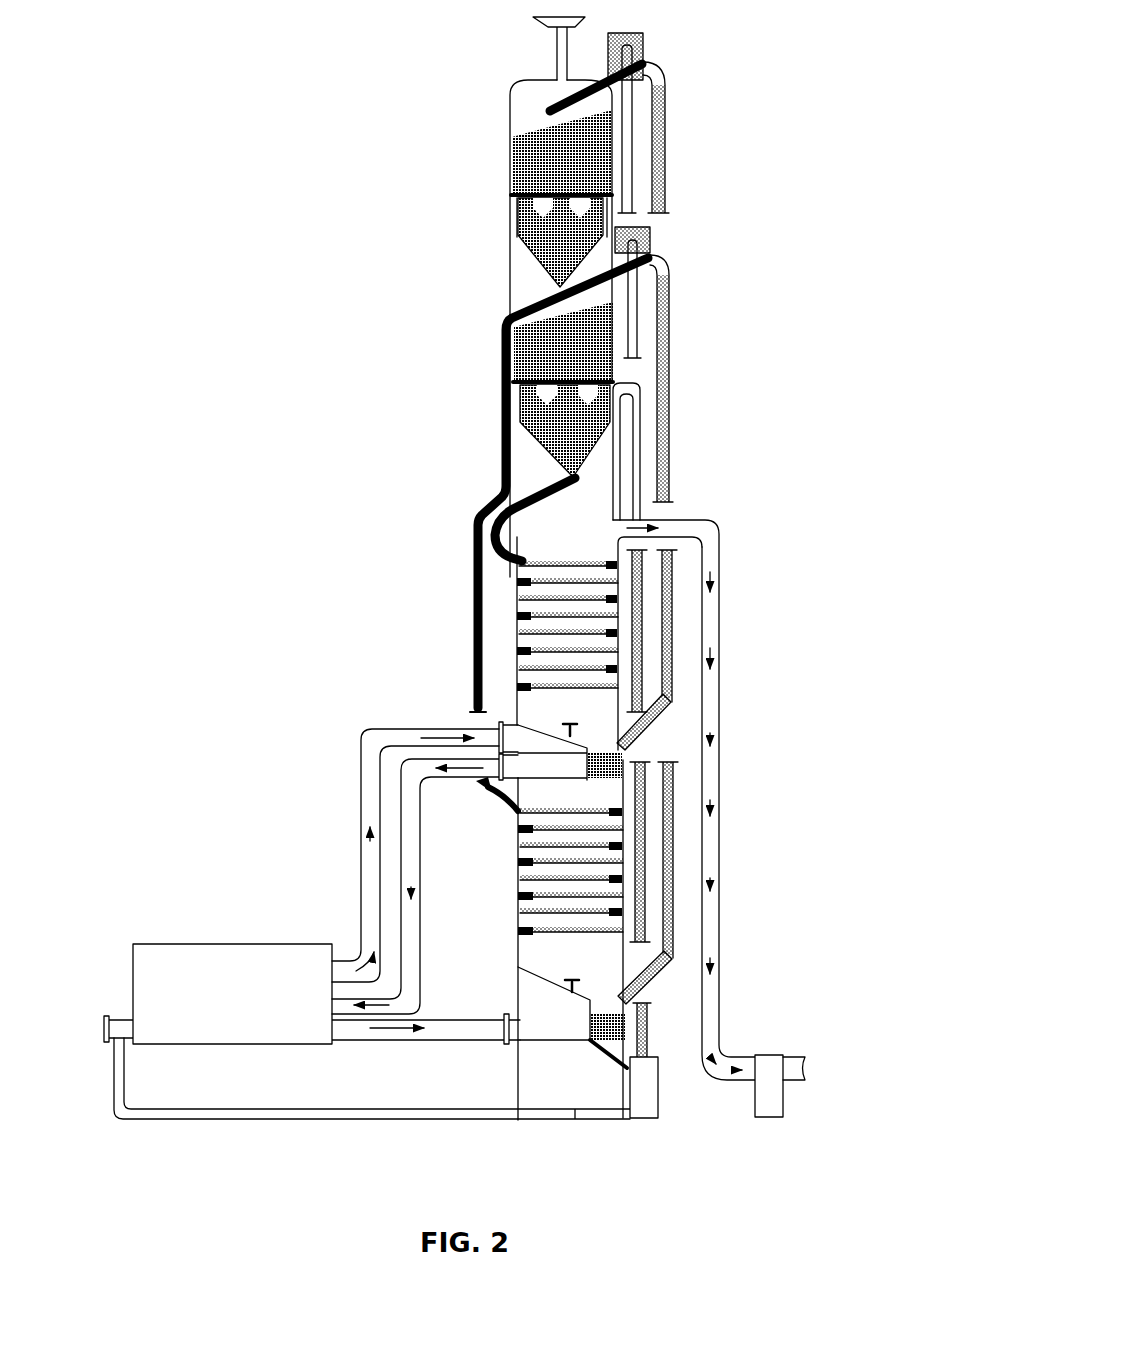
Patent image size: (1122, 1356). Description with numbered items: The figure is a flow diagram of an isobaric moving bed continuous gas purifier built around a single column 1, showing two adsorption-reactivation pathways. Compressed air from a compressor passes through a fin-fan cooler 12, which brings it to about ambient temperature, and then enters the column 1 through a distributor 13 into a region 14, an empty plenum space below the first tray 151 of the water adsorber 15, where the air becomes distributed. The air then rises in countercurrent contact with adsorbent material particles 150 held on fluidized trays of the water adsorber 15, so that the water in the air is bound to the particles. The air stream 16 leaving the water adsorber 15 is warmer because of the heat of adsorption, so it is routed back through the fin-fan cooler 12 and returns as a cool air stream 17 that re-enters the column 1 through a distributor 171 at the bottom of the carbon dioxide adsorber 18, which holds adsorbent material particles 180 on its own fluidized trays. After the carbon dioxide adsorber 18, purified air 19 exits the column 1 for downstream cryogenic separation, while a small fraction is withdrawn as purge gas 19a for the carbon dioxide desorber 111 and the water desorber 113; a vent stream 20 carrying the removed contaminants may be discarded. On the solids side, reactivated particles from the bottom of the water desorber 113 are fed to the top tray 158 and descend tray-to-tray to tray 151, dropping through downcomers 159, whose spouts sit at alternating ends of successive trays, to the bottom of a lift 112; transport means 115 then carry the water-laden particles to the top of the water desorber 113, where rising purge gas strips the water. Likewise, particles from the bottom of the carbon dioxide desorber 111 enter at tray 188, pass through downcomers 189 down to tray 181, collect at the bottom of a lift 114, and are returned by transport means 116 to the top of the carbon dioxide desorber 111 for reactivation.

The column 1 is at (466, 298).
The fin-fan cooler 12 is at (185, 943).
The distributor 13 is at (503, 999).
The region 14 is at (508, 953).
The water adsorber 15 is at (625, 866).
The air stream 16 is at (411, 836).
The cool air stream 17 is at (370, 860).
The carbon dioxide adsorber 18 is at (622, 627).
The purified air 19 is at (645, 520).
The purge gas 19a is at (647, 460).
The vent stream 20 is at (549, 13).
The carbon dioxide desorber 111 is at (627, 383).
The lift 112 is at (648, 1018).
The water desorber 113 is at (665, 152).
The lift 114 is at (645, 760).
The transport means 115 is at (660, 47).
The transport means 116 is at (664, 237).
The adsorbent material particles 150 is at (500, 882).
The tray 151 is at (518, 937).
The tray 158 is at (518, 815).
The downcomers 159 is at (620, 833).
The distributor 171 is at (525, 738).
The adsorbent material particles 180 is at (500, 629).
The tray 181 is at (517, 686).
The tray 188 is at (517, 567).
The downcomers 189 is at (617, 585).